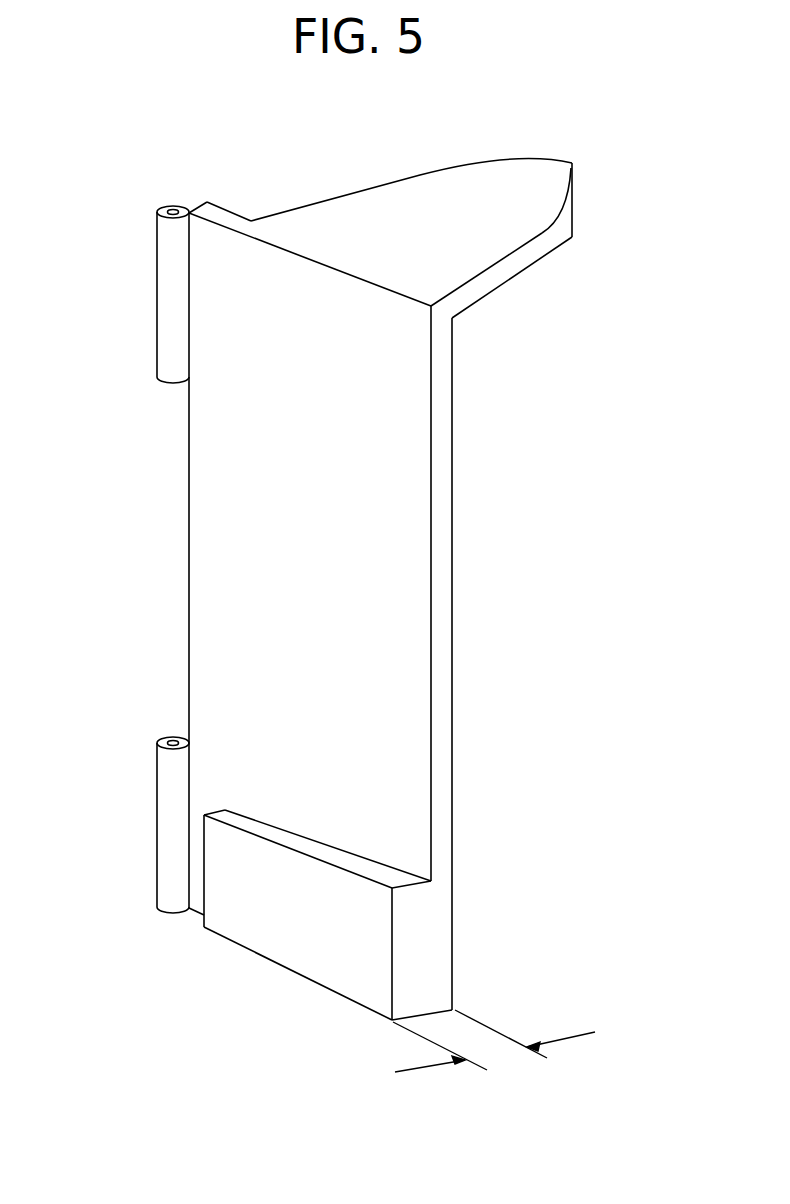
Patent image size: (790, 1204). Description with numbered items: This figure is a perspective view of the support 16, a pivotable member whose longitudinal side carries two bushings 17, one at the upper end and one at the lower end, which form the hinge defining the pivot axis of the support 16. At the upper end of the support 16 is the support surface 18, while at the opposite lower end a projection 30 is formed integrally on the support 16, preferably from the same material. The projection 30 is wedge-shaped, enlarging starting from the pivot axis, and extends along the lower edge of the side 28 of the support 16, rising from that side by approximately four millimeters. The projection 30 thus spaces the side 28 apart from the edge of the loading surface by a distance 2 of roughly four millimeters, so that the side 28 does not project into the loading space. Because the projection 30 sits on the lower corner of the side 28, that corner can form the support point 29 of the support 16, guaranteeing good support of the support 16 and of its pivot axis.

The distance 2 is at (490, 1047).
The support 16 is at (256, 616).
The bushings 17 is at (167, 789).
The support surface 18 is at (505, 225).
The side 28 is at (218, 548).
The support point 29 is at (422, 1022).
The projection 30 is at (270, 933).